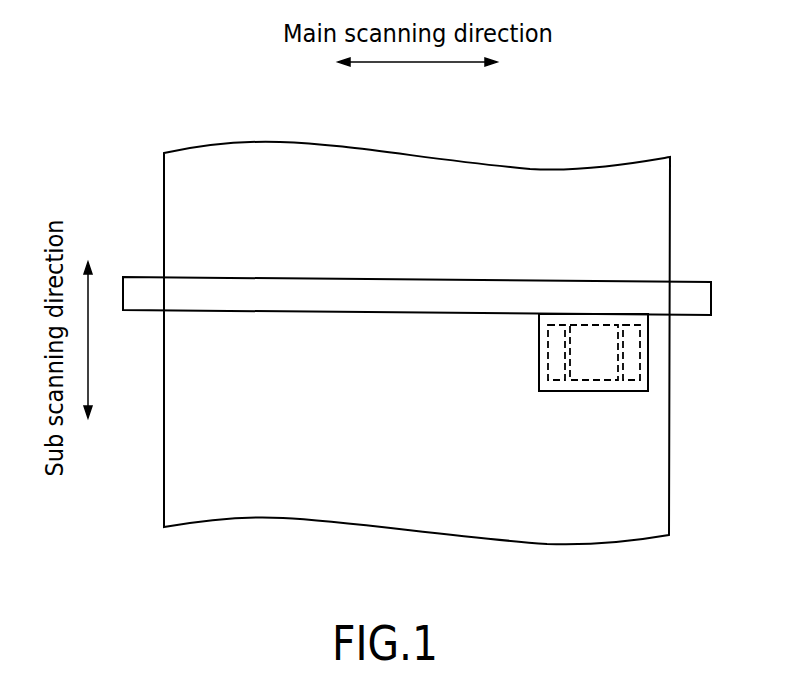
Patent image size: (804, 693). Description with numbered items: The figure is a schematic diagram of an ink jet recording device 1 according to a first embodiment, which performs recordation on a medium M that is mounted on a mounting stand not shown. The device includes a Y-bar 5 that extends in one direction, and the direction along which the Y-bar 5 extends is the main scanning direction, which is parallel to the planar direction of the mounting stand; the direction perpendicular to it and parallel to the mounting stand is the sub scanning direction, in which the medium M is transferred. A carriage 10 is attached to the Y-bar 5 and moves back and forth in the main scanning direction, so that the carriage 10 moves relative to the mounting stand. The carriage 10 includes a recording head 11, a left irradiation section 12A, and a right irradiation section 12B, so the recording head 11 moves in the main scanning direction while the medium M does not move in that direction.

The ink jet recording device 1 is at (655, 119).
The Y-bar 5 is at (417, 278).
The carriage 10 is at (648, 357).
The recording head 11 is at (595, 395).
The left irradiation section 12A is at (558, 395).
The right irradiation section 12B is at (633, 395).
The medium M is at (415, 507).